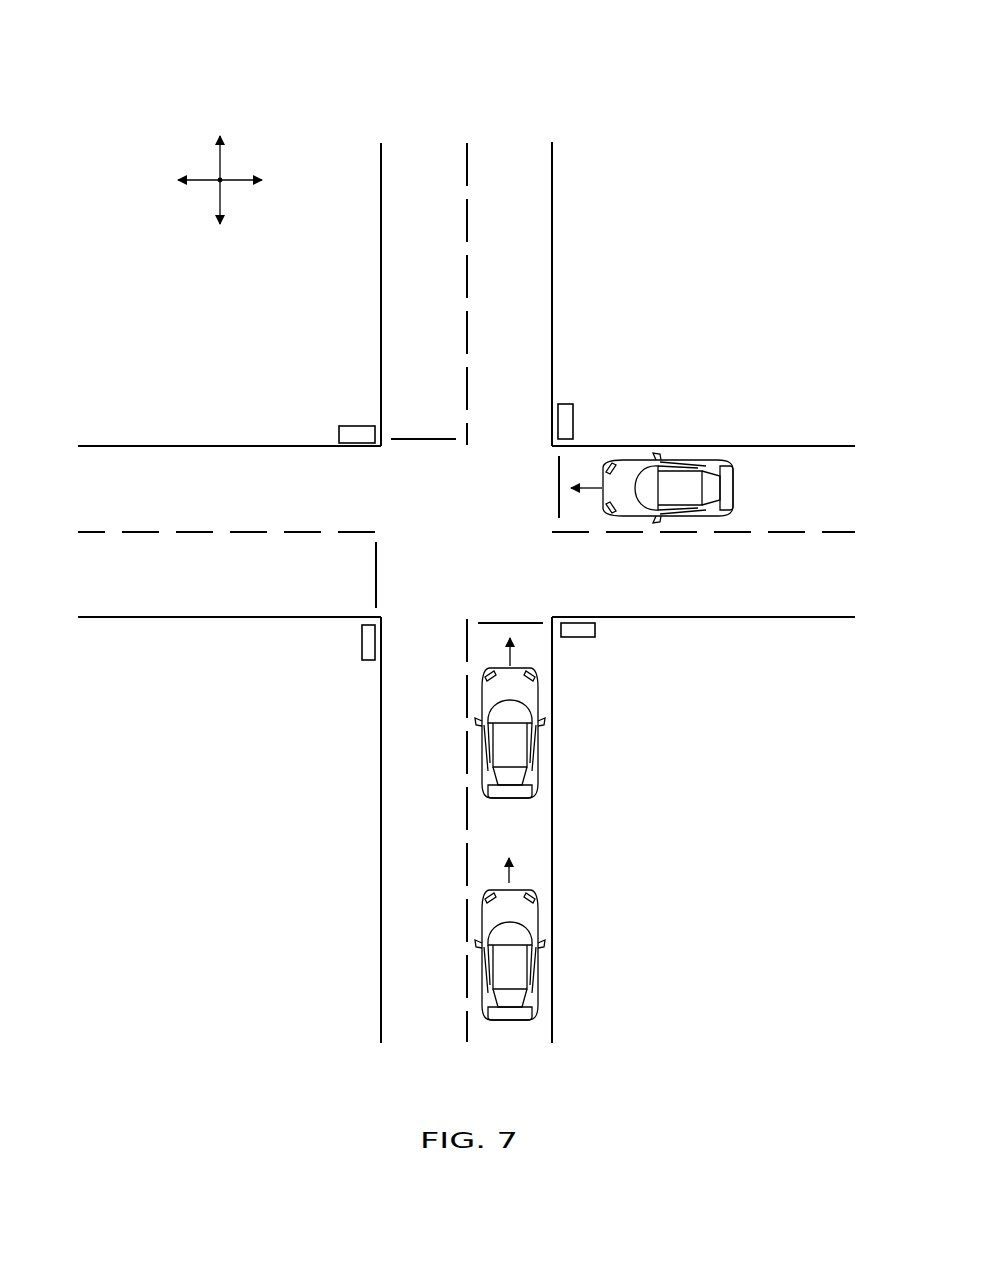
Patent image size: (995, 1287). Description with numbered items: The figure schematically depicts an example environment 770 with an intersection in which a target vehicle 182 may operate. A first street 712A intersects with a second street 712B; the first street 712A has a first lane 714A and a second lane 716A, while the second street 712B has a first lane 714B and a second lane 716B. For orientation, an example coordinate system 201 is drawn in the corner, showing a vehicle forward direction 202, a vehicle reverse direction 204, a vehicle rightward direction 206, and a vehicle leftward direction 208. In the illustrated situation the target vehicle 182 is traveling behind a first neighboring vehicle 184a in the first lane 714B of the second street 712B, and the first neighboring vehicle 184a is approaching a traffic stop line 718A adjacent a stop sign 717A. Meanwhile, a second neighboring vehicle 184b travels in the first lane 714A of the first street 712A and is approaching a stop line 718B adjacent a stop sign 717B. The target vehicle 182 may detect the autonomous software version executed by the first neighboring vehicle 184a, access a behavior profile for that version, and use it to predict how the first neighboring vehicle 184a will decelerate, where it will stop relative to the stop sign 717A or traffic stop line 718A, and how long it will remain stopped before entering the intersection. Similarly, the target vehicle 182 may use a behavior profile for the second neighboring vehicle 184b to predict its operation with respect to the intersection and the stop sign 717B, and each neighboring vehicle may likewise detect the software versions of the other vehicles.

The coordinate system 201 is at (183, 90).
The vehicle forward direction 202 is at (222, 156).
The vehicle reverse direction 204 is at (218, 200).
The vehicle rightward direction 206 is at (242, 182).
The vehicle leftward direction 208 is at (198, 176).
The environment 770 is at (781, 171).
The first street 712A is at (677, 446).
The second street 712B is at (381, 290).
The first lane 714A is at (807, 463).
The first lane 714B is at (537, 210).
The second lane 716A is at (195, 617).
The second lane 716B is at (381, 997).
The stop sign 717A is at (582, 638).
The stop sign 717B is at (571, 404).
The traffic stop line 718A is at (502, 622).
The stop line 718B is at (558, 480).
The target vehicle 182 is at (509, 1022).
The first neighboring vehicle 184a is at (536, 750).
The second neighboring vehicle 184b is at (667, 514).